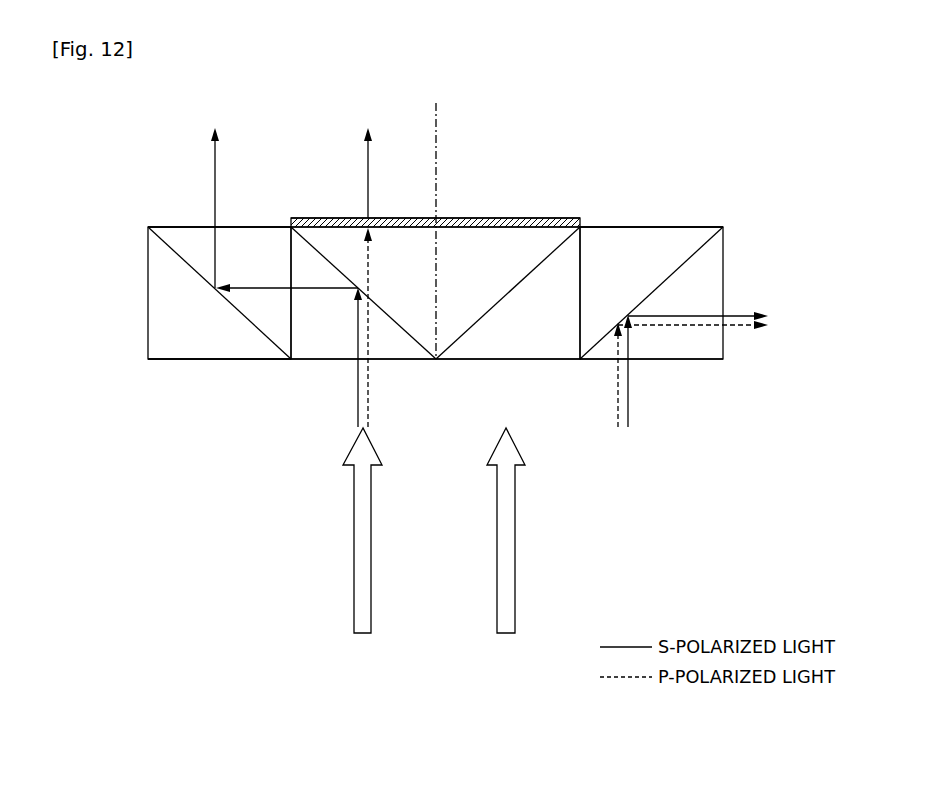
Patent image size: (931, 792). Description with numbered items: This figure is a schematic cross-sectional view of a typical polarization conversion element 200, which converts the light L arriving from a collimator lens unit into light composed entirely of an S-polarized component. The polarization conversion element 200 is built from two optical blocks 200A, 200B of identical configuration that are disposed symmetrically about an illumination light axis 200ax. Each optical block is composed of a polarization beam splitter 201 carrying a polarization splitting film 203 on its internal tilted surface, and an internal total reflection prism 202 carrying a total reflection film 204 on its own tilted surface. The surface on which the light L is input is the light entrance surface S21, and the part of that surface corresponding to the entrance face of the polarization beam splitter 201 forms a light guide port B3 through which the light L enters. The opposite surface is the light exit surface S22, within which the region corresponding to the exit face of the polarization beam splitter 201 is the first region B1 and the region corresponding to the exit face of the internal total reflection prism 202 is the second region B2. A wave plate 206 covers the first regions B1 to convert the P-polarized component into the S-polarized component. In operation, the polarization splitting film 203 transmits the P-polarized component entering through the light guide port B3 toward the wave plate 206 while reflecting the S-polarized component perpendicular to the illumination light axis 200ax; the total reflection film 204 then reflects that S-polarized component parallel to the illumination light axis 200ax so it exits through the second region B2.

The polarization conversion element 200 is at (698, 170).
The optical block 200A is at (276, 430).
The optical block 200B is at (604, 436).
The illumination light axis 200ax is at (436, 215).
The polarization beam splitter 201 is at (400, 352).
The internal total reflection prism 202 is at (162, 317).
The polarization splitting film 203 is at (390, 313).
The total reflection film 204 is at (243, 316).
The wave plate 206 is at (457, 222).
The first region B1 is at (325, 218).
The second region B2 is at (187, 225).
The light guide port B3 is at (322, 362).
The light entrance surface S21 is at (163, 360).
The light exit surface S22 is at (163, 225).
The light L is at (550, 432).